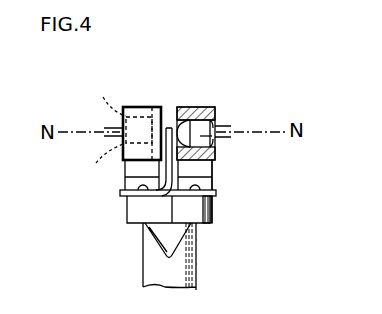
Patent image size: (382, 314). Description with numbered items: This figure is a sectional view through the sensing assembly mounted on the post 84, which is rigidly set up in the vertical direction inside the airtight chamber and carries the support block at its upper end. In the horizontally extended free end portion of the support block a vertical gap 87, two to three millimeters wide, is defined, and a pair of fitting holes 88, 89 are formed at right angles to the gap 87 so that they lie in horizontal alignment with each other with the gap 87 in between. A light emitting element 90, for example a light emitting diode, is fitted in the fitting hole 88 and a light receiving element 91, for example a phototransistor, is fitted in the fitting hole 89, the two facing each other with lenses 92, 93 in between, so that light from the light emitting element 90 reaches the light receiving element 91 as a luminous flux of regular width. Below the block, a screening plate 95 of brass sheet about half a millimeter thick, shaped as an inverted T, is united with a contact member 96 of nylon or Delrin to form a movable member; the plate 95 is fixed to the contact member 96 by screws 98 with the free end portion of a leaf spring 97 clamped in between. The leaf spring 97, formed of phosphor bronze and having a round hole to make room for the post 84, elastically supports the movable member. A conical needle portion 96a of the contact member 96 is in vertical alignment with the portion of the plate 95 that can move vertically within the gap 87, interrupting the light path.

The post 84 is at (193, 267).
The vertical gap 87 is at (174, 106).
The fitting hole 88 is at (214, 120).
The fitting hole 89 is at (105, 95).
The light emitting element 90 is at (205, 138).
The light receiving element 91 is at (99, 164).
The lens 92 is at (194, 110).
The lens 93 is at (152, 107).
The screening plate 95 is at (213, 170).
The contact member 96 is at (218, 212).
The conical needle portion 96a is at (162, 243).
The leaf spring 97 is at (212, 205).
The screw 98 is at (213, 192).